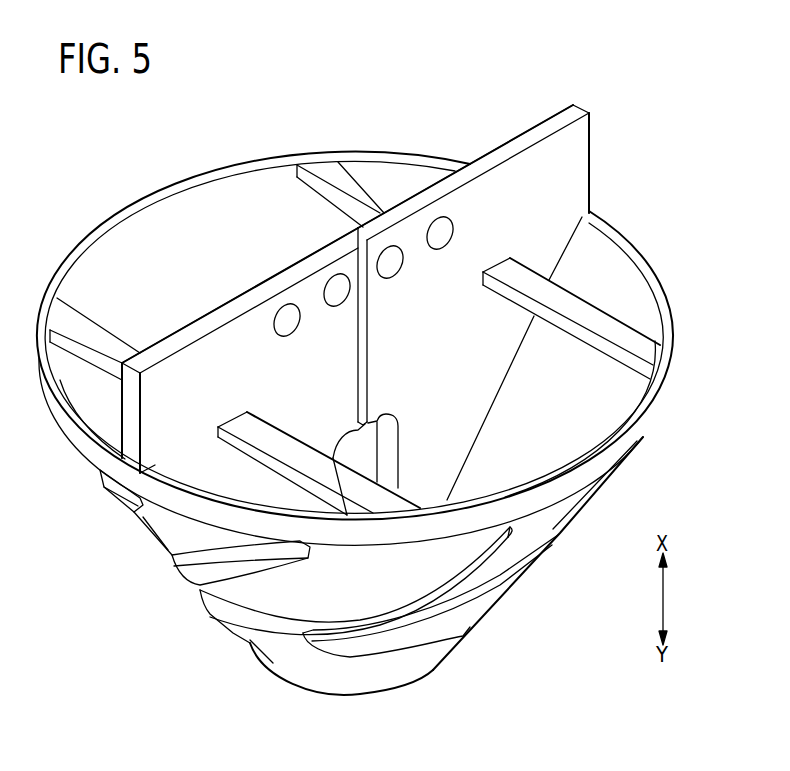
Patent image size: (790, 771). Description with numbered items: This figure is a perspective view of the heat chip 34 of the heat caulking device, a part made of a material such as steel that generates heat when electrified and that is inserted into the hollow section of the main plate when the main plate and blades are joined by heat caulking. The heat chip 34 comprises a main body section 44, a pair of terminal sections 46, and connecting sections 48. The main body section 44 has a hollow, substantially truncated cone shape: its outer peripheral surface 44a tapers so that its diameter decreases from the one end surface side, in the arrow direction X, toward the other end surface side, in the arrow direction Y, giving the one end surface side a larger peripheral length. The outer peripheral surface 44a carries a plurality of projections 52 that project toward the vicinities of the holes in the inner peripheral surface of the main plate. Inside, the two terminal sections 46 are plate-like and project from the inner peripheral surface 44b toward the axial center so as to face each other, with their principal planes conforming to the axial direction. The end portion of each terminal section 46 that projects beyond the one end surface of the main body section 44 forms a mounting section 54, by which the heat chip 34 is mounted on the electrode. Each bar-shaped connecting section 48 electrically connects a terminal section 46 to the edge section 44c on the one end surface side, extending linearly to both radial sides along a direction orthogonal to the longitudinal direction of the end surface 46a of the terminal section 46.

The heat chip 34 is at (188, 118).
The main body section 44 is at (668, 294).
The outer peripheral surface 44a is at (548, 512).
The inner peripheral surface 44b is at (247, 198).
The edge section 44c is at (638, 262).
The terminal section 46 is at (486, 154).
The end surface 46a is at (558, 120).
The connecting section 48 is at (95, 335).
The projection 52 is at (283, 625).
The mounting section 54 is at (577, 154).